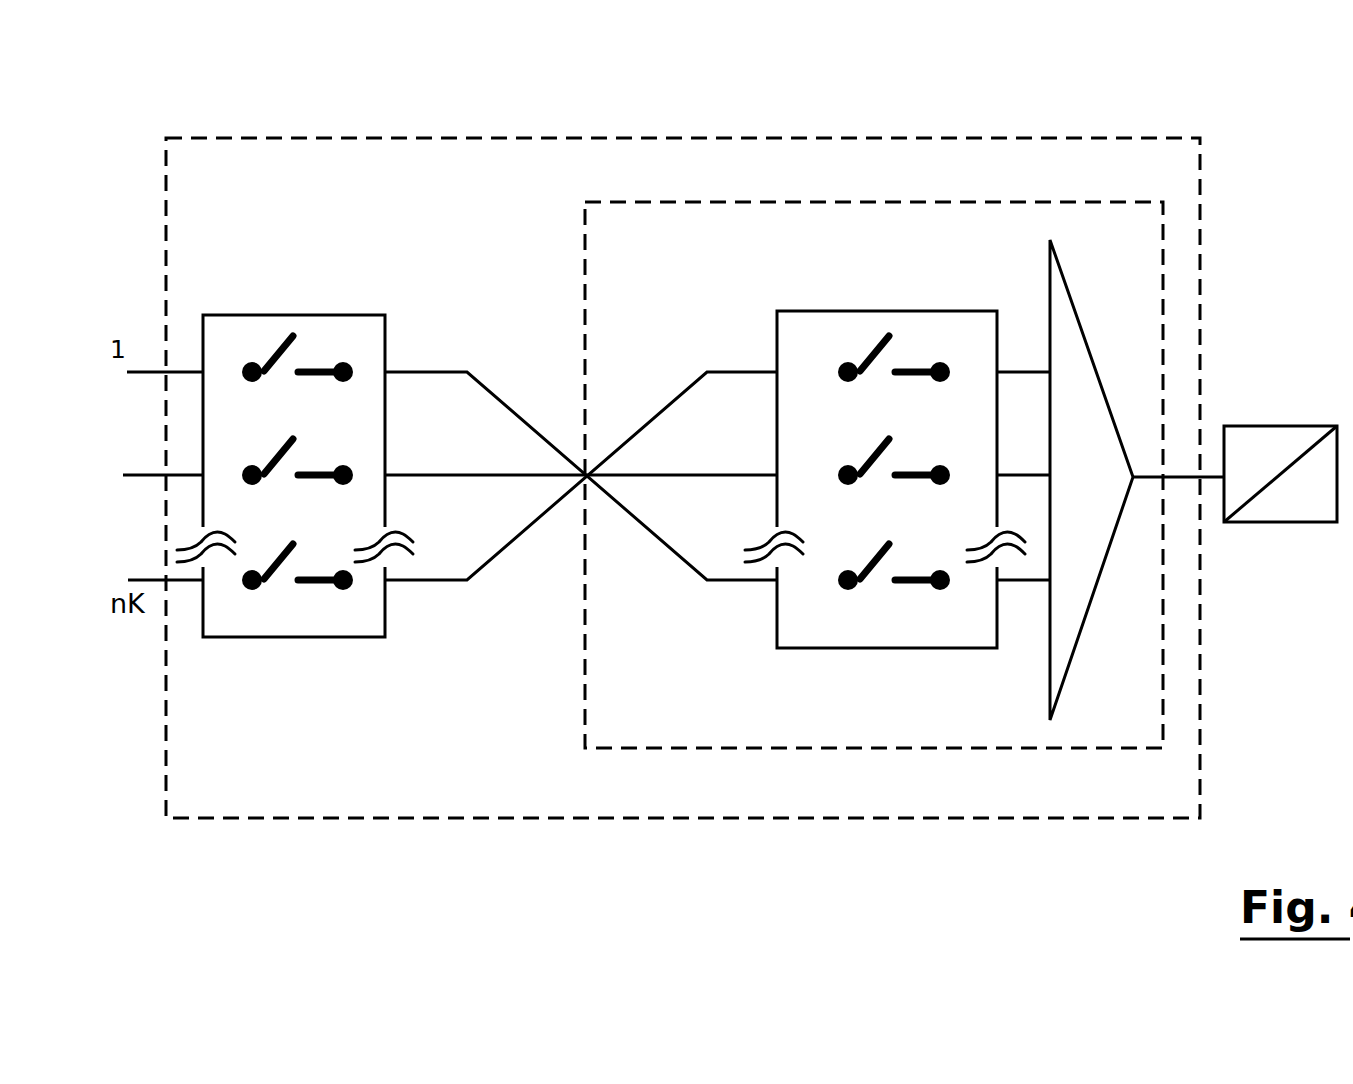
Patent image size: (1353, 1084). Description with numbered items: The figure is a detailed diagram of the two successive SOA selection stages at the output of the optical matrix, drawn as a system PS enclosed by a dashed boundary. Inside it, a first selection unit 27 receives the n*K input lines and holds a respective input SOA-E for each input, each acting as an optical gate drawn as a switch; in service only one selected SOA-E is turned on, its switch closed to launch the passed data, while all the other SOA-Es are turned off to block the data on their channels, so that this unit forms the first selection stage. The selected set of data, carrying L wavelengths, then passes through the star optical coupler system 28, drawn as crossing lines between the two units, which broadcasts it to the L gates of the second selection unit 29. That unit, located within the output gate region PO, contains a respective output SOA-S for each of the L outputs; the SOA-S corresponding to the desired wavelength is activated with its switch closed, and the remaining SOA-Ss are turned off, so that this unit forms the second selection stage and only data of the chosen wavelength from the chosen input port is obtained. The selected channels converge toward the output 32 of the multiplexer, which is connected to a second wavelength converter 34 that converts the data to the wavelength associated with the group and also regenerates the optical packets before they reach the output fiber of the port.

The first selection unit 27 is at (220, 570).
The star optical coupler system 28 is at (578, 678).
The second selection unit 29 is at (894, 495).
The output of second multiplexer 32 is at (1083, 332).
The second wavelength converter 34 is at (1258, 426).
The selection system PS is at (248, 139).
The optical gate PO is at (676, 200).
The input SOA SOA-E is at (251, 447).
The output SOA SOA-S is at (900, 343).